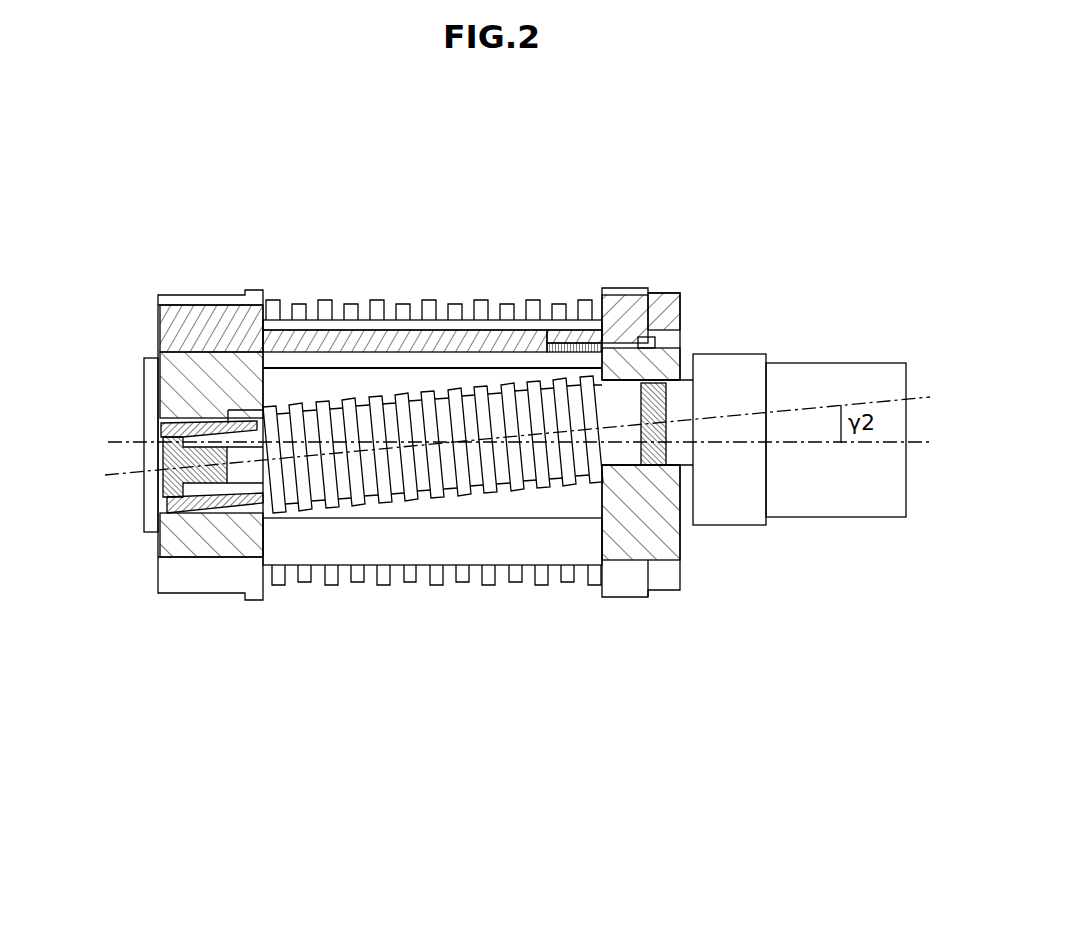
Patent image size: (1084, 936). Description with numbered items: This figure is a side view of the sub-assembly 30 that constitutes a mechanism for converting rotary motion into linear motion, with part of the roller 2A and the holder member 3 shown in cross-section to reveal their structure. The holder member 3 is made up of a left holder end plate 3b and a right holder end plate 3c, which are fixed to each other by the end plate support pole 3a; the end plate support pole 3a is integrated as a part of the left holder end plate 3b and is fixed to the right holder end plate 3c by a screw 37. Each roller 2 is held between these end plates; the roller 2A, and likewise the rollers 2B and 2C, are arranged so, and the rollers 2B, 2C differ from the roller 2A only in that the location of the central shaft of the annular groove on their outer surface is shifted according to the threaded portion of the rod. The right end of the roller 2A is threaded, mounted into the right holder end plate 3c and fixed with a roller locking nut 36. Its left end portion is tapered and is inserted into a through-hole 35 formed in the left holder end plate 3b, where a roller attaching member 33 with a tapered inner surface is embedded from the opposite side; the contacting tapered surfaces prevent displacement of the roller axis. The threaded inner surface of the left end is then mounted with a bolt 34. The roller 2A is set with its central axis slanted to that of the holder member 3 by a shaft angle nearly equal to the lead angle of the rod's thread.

The roller 2 is at (433, 448).
The roller 2A is at (390, 580).
The roller 2B is at (362, 307).
The roller 2C is at (502, 583).
The holder member 3 is at (286, 607).
The end plate support pole 3a is at (460, 343).
The left holder end plate 3b is at (202, 318).
The right holder end plate 3c is at (622, 305).
The sub-assembly 30 is at (420, 686).
The roller attaching member 33 is at (165, 428).
The bolt 34 is at (157, 462).
The through-hole 35 is at (170, 500).
The roller locking nut 36 is at (660, 470).
The screw 37 is at (573, 347).